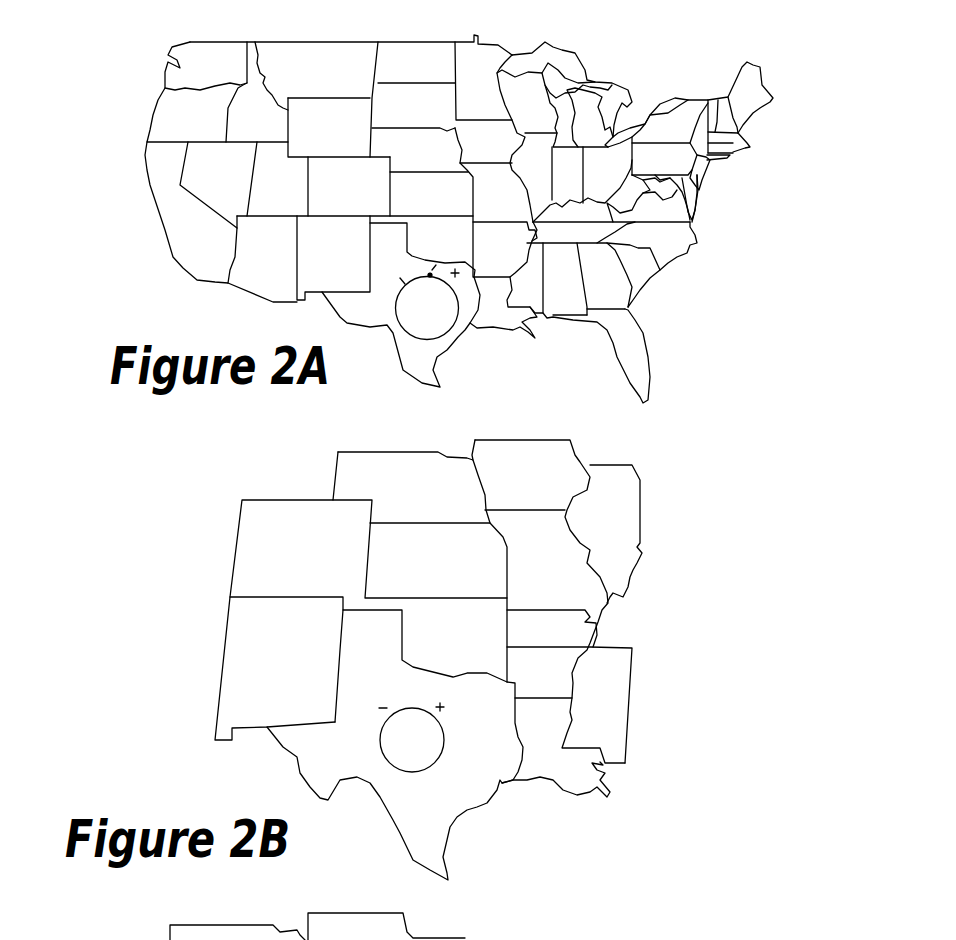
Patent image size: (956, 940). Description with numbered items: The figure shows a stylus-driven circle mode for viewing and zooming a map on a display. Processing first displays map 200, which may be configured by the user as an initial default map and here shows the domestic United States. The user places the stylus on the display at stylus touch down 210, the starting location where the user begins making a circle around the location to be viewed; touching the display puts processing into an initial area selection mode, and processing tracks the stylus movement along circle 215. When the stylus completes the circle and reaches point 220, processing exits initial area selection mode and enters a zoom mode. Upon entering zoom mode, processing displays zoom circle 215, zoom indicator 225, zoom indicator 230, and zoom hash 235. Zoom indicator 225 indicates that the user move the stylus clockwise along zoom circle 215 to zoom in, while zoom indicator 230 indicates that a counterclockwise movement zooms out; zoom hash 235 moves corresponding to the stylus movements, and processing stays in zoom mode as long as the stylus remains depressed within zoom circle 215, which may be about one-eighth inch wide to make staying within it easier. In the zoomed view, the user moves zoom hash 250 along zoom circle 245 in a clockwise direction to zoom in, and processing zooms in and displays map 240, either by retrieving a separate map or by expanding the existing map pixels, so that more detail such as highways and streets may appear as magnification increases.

In FIG. 2A, the map 200 is at (765, 213).
In FIG. 2A, the stylus touch down 210 is at (438, 263).
In FIG. 2A, the zoom circle 215 is at (447, 330).
In FIG. 2A, the point 220 is at (430, 275).
In FIG. 2A, the zoom indicator 225 is at (457, 277).
In FIG. 2A, the zoom indicator 230 is at (400, 275).
In FIG. 2A, the zoom hash 235 is at (430, 275).
In FIG. 2B, the map 240 is at (749, 603).
In FIG. 2B, the zoom circle 245 is at (418, 708).
In FIG. 2B, the zoom hash 250 is at (422, 712).